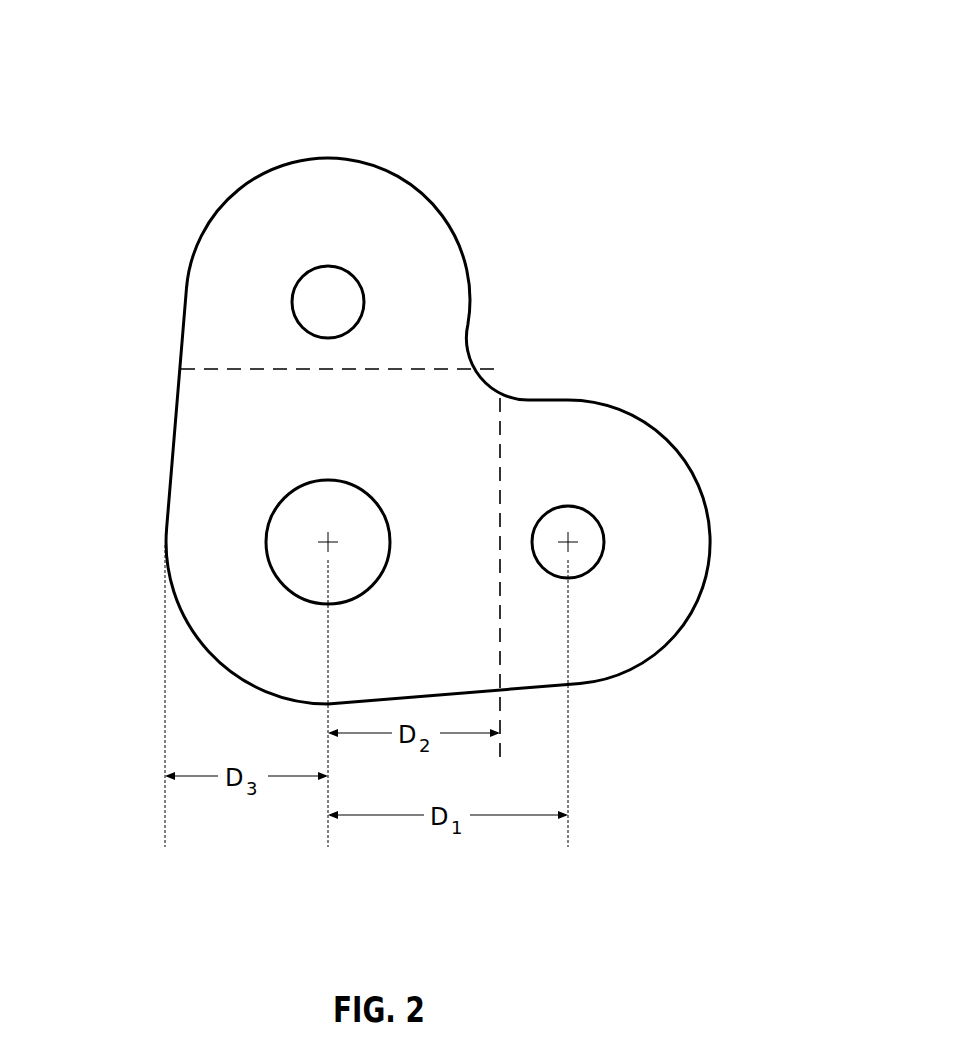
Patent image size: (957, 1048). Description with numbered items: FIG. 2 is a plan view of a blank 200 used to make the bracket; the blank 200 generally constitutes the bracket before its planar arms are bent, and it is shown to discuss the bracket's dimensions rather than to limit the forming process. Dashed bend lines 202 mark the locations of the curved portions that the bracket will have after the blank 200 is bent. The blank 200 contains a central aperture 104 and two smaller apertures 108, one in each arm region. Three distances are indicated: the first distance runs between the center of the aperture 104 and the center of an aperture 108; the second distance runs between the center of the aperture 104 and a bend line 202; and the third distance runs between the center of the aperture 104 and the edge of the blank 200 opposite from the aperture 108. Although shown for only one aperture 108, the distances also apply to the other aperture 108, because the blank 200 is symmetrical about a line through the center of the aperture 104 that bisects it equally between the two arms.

The blank 200 is at (155, 46).
The aperture 104 is at (285, 528).
The aperture 108 is at (346, 283).
The bend lines 202 is at (420, 368).